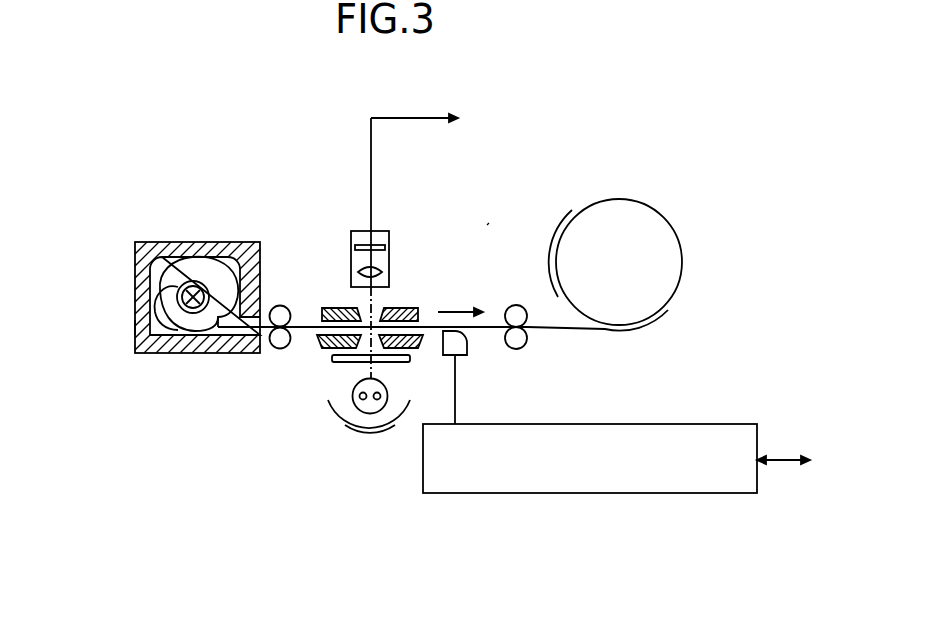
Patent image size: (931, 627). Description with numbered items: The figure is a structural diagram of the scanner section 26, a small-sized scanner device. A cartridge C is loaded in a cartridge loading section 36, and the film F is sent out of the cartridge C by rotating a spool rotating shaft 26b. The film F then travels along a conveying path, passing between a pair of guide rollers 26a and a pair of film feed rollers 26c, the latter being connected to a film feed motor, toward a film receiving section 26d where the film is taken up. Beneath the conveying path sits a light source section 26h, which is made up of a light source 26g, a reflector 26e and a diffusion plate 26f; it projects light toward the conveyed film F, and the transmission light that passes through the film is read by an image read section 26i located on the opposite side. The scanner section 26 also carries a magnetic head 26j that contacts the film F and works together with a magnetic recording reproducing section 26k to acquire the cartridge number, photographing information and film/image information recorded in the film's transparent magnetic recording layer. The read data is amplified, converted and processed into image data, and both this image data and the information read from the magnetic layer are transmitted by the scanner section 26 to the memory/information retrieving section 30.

The scanner section 26 is at (487, 225).
The pair of guide rollers 26a is at (278, 305).
The spool rotating shaft 26b is at (137, 323).
The pair of film feed rollers 26c is at (514, 304).
The film receiving section 26d is at (660, 235).
The reflector 26e is at (352, 428).
The diffusion plate 26f is at (330, 365).
The light source 26g is at (375, 412).
The light source section 26h is at (322, 400).
The image read section 26i is at (393, 243).
The magnetic head 26j is at (468, 342).
The magnetic recording reproducing section 26k is at (495, 494).
The memory/information retrieving section 30 is at (607, 293).
The cartridge loading section 36 is at (135, 266).
The cartridge C is at (199, 258).
The film F is at (305, 323).